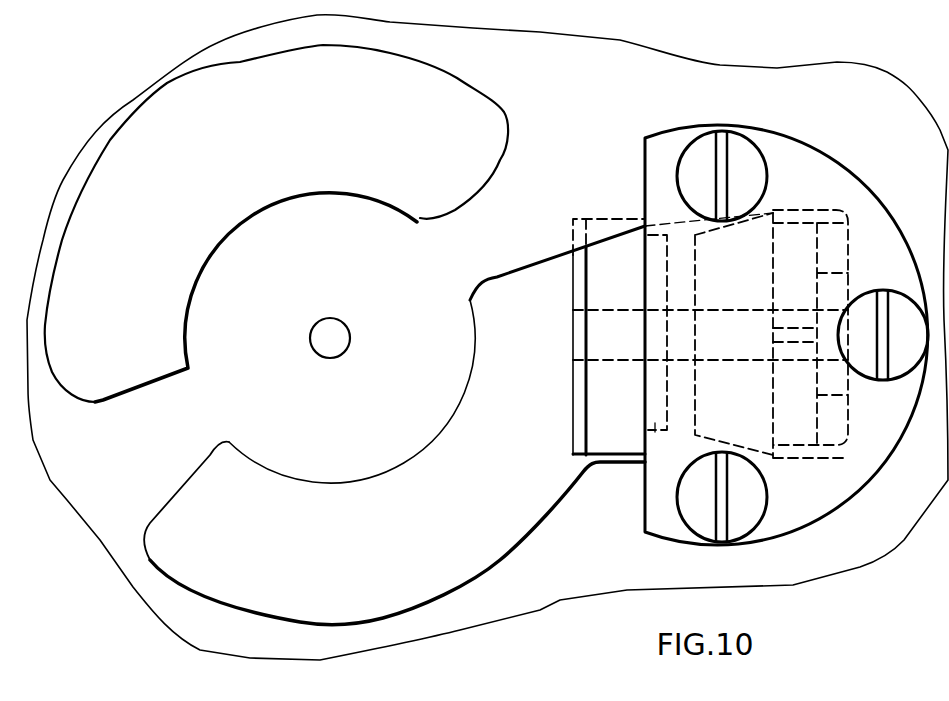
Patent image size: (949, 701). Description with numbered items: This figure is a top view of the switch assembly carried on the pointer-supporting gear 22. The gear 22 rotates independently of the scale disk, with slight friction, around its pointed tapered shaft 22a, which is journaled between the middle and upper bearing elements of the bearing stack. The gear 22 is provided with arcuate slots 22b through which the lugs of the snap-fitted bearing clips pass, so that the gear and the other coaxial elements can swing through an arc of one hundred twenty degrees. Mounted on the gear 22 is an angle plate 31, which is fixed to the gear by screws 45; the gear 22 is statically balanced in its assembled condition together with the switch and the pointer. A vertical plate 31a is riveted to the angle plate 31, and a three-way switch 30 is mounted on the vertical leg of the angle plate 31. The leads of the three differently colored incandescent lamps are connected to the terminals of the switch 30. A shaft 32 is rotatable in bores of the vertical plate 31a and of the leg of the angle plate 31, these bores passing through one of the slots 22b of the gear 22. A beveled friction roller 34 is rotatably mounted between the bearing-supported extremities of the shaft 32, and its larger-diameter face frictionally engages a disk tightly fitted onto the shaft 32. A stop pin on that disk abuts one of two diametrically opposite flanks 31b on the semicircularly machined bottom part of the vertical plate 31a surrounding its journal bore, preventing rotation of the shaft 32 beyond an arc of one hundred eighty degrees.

The pointer-supporting gear 22 is at (732, 78).
The tapered shaft 22a is at (332, 330).
The arcuate slots 22b is at (102, 390).
The three-way switch 30 is at (608, 265).
The angle plate 31 is at (808, 160).
The vertical plate 31a is at (852, 233).
The flanks 31b is at (655, 427).
The shaft 32 is at (790, 362).
The beveled friction roller 34 is at (742, 222).
The screws 45 is at (903, 360).